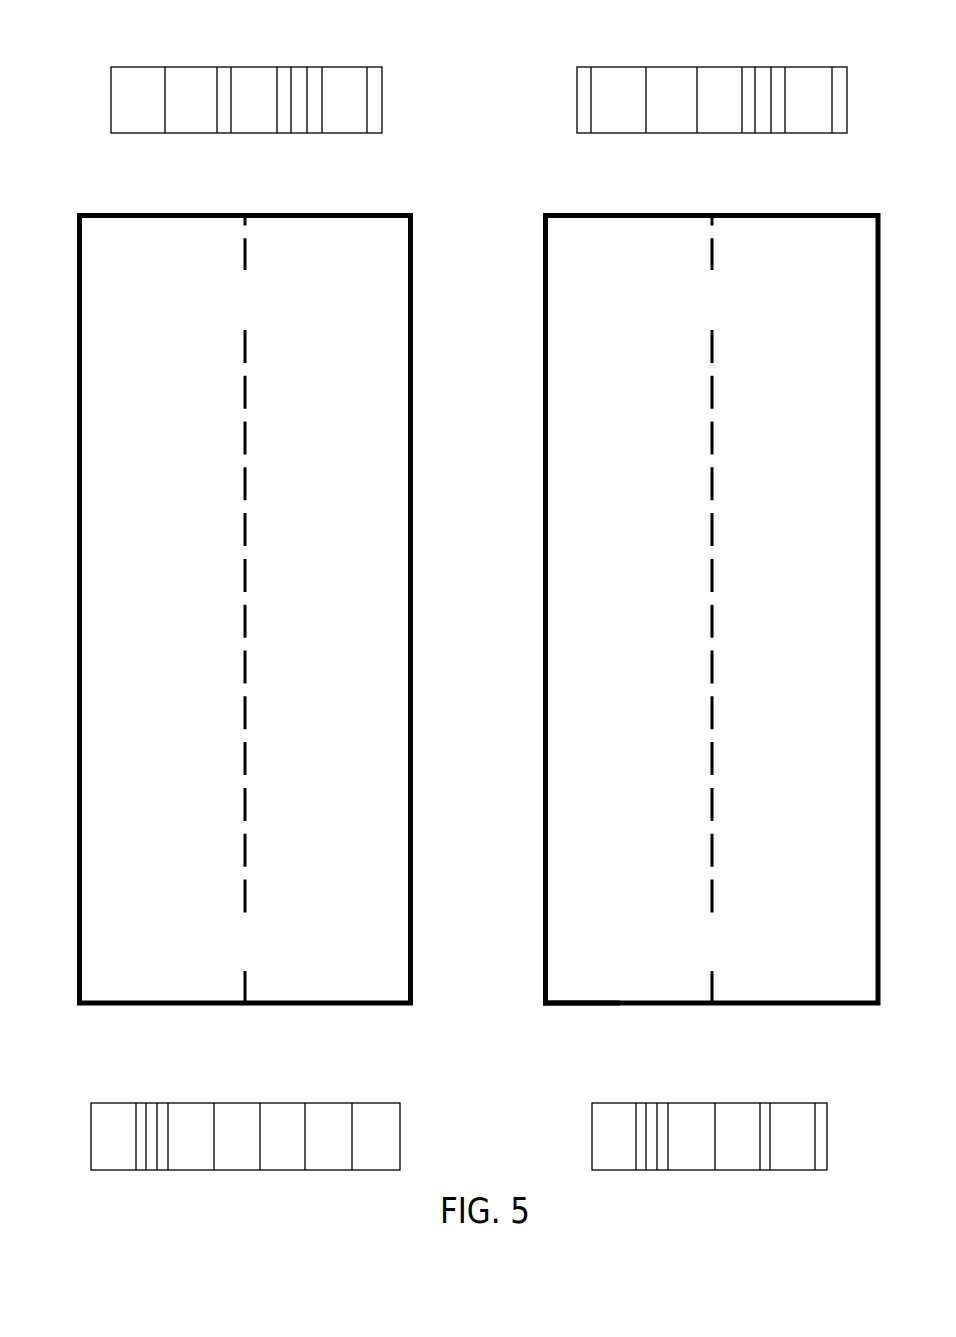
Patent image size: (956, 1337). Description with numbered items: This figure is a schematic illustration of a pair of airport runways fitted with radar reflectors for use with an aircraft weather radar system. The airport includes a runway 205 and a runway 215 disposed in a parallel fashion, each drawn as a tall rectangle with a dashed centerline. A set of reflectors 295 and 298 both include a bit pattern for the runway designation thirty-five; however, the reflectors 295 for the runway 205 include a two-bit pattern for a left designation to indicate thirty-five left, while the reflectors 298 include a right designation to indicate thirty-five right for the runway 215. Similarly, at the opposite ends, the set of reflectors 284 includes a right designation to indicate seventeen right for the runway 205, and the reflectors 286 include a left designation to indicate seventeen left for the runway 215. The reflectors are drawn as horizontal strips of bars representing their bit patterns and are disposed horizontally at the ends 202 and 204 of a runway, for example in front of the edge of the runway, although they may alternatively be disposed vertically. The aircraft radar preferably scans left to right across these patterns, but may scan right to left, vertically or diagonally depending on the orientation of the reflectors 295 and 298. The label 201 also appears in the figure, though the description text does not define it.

The first card 201 is at (107, 213).
The end of runway 202 is at (575, 213).
The end of runway 204 is at (543, 952).
The runway 205 is at (76, 592).
The runway 215 is at (543, 592).
The set of reflectors 284 is at (250, 67).
The reflectors 286 is at (715, 67).
The reflectors 295 is at (284, 1103).
The reflectors 298 is at (727, 1103).